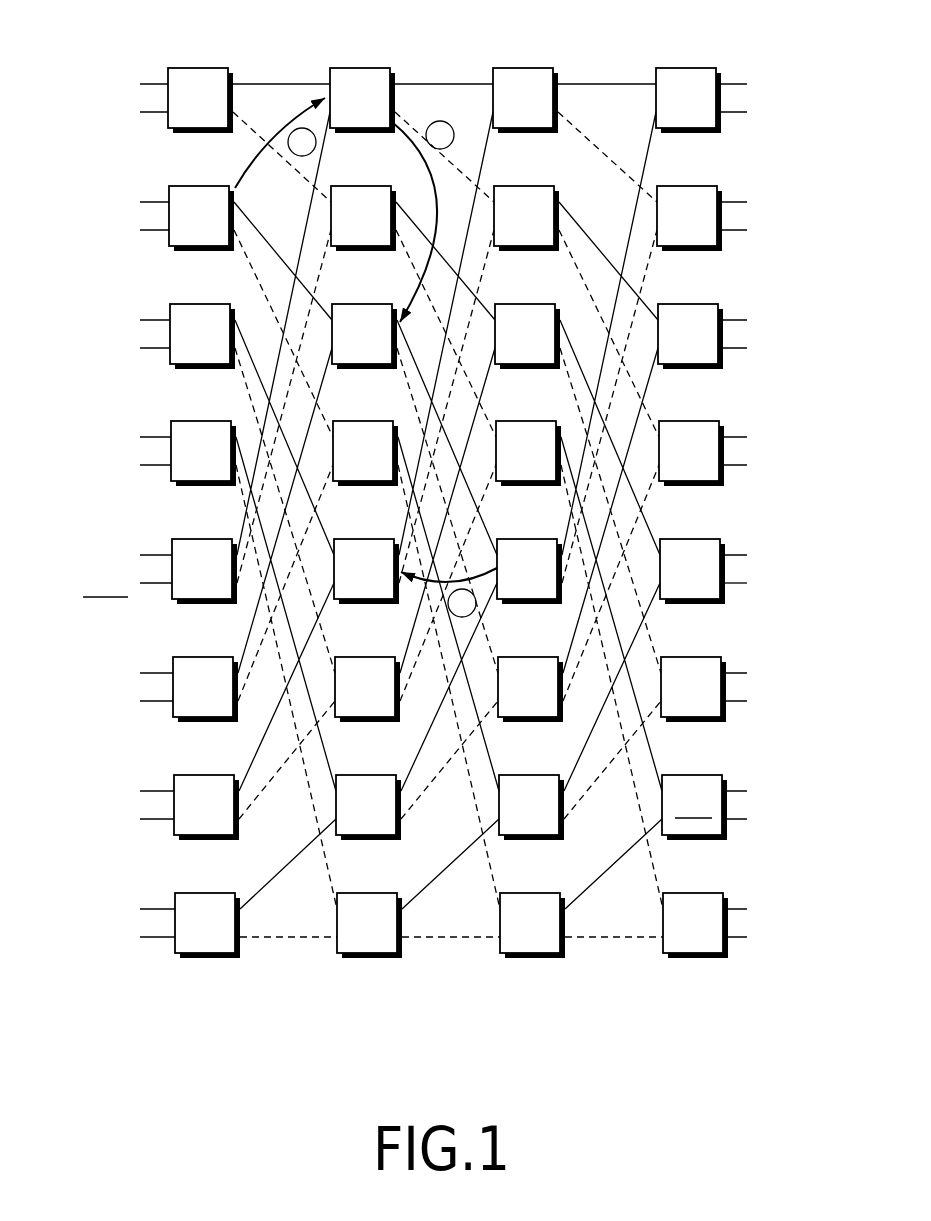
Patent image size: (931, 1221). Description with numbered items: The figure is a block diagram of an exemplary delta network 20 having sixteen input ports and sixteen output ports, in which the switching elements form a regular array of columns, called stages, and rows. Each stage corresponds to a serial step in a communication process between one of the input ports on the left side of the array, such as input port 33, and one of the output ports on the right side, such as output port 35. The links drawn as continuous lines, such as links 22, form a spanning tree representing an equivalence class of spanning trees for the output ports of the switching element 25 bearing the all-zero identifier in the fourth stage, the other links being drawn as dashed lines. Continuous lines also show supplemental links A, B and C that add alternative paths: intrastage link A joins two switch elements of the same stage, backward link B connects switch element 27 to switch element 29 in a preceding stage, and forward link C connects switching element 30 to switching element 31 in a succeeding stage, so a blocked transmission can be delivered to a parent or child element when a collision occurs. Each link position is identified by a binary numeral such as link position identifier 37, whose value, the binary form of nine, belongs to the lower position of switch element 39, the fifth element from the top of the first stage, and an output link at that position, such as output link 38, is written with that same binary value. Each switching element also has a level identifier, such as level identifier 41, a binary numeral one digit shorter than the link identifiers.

The delta network 20 is at (323, 995).
The links 22 is at (257, 83).
The switching element 25 is at (698, 68).
The switch element 27 is at (513, 538).
The switch element 29 is at (345, 538).
The switching element 30 is at (198, 187).
The switching element 31 is at (340, 68).
The input port 33 is at (200, 304).
The output port 35 is at (681, 304).
The link position identifier 37 is at (100, 600).
The output link 38 is at (724, 586).
The switch element 39 is at (200, 539).
The level identifier 41 is at (697, 820).